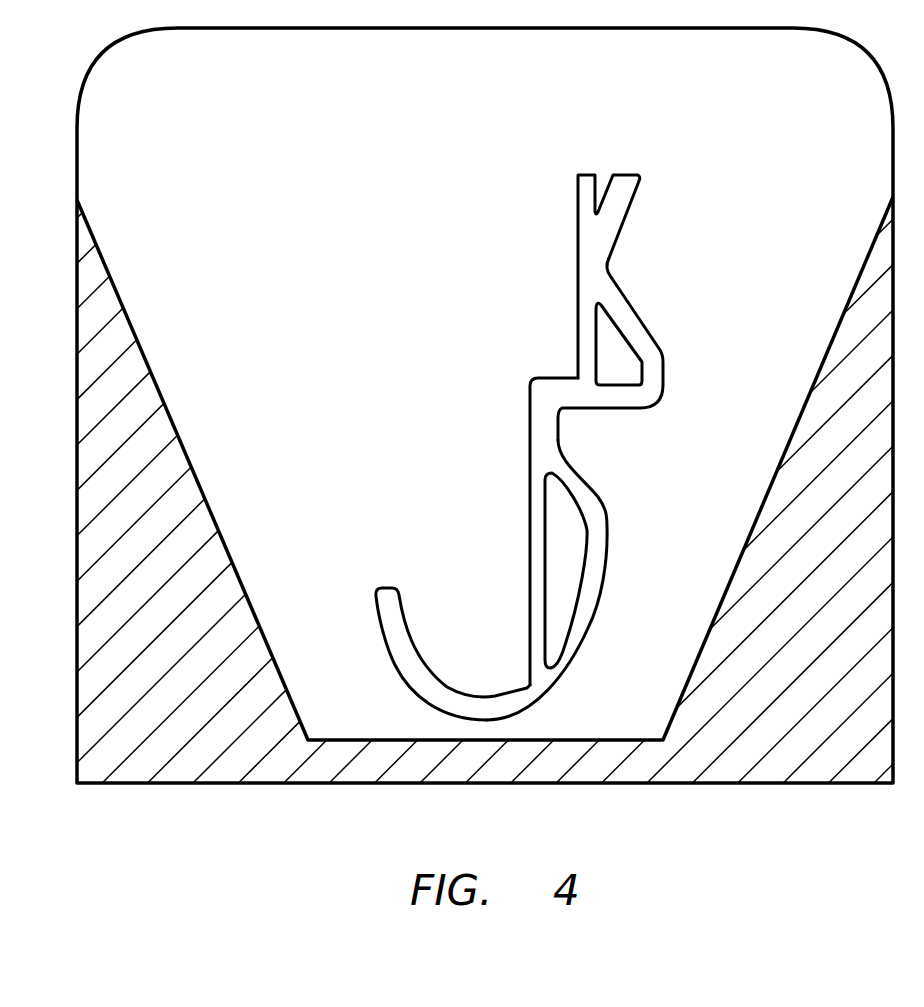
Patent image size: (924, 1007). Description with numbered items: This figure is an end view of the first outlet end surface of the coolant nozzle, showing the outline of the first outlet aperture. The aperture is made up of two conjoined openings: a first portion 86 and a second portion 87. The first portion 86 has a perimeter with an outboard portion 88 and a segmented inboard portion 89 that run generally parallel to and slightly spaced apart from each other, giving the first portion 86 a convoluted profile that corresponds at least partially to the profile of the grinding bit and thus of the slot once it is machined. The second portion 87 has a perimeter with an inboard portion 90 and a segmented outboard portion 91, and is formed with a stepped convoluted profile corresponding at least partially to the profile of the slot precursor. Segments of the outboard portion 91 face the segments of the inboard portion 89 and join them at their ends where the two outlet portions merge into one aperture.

The first portion 86 is at (598, 587).
The second portion 87 is at (538, 550).
The outboard portion 88 is at (663, 378).
The segmented inboard portion 89 is at (576, 626).
The inboard portion 90 is at (578, 218).
The segmented outboard portion 91 is at (598, 342).